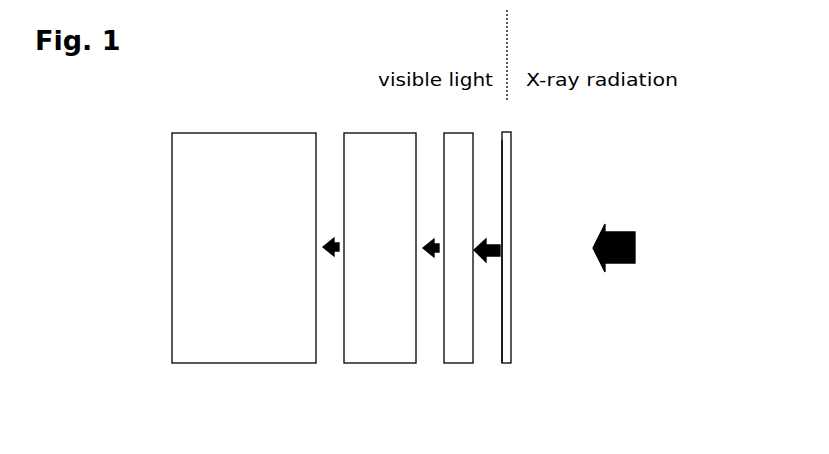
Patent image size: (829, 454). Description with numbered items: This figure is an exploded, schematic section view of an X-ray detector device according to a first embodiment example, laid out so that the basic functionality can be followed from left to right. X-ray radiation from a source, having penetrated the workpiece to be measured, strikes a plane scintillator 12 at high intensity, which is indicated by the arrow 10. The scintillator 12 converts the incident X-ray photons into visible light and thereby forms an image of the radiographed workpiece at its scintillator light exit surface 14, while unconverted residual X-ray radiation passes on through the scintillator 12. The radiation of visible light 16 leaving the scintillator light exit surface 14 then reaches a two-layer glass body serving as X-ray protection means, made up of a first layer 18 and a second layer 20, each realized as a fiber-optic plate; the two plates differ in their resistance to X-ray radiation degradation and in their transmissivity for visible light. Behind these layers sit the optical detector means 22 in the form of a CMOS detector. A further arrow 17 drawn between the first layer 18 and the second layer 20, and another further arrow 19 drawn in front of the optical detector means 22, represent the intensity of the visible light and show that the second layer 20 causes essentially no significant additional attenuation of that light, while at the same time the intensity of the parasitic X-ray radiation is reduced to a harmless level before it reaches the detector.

The arrow 10 is at (622, 264).
The scintillator 12 is at (514, 340).
The scintillator light exit surface 14 is at (493, 352).
The radiation of visible light 16 is at (494, 241).
The further arrow 17 is at (430, 240).
The first layer 18 is at (461, 345).
The further arrow 19 is at (333, 234).
The second layer 20 is at (372, 345).
The optical detector means 22 is at (238, 346).